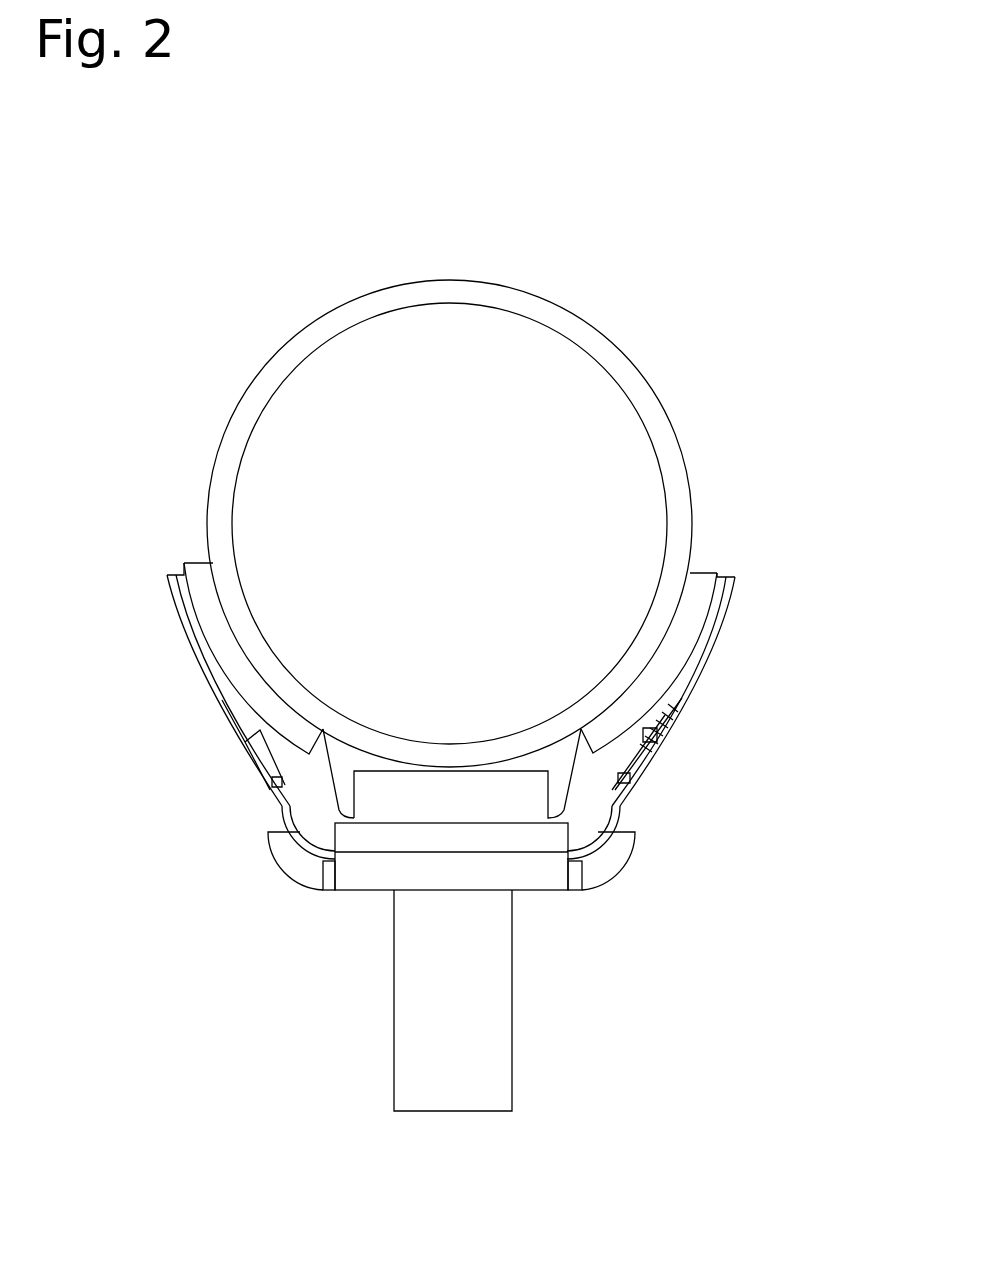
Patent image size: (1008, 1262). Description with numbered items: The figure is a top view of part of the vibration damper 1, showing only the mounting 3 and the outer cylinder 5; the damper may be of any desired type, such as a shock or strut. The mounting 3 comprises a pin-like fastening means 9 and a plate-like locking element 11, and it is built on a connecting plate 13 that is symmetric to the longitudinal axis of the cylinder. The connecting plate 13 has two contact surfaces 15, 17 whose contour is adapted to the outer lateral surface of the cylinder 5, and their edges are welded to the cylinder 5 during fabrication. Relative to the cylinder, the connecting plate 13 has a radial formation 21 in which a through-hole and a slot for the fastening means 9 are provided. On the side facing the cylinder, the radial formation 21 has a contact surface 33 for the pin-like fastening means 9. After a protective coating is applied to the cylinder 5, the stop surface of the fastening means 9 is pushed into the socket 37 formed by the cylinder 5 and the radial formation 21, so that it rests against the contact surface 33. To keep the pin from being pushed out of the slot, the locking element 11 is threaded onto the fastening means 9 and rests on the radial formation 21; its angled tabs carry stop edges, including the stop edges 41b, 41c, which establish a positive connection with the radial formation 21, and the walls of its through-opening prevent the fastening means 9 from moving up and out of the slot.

The vibration damper 1 is at (511, 803).
The mounting 3 is at (491, 960).
The outer cylinder 5 is at (622, 362).
The pin-like fastening means 9 is at (525, 973).
The locking element 11 is at (587, 890).
The connecting plate 13 is at (652, 726).
The contact surface 15 is at (218, 603).
The contact surface 17 is at (645, 643).
The radial formation 21 is at (322, 825).
The contact surface 33 is at (332, 812).
The socket 37 is at (550, 763).
The stop edge 41b is at (310, 858).
The stop edge 41c is at (602, 845).